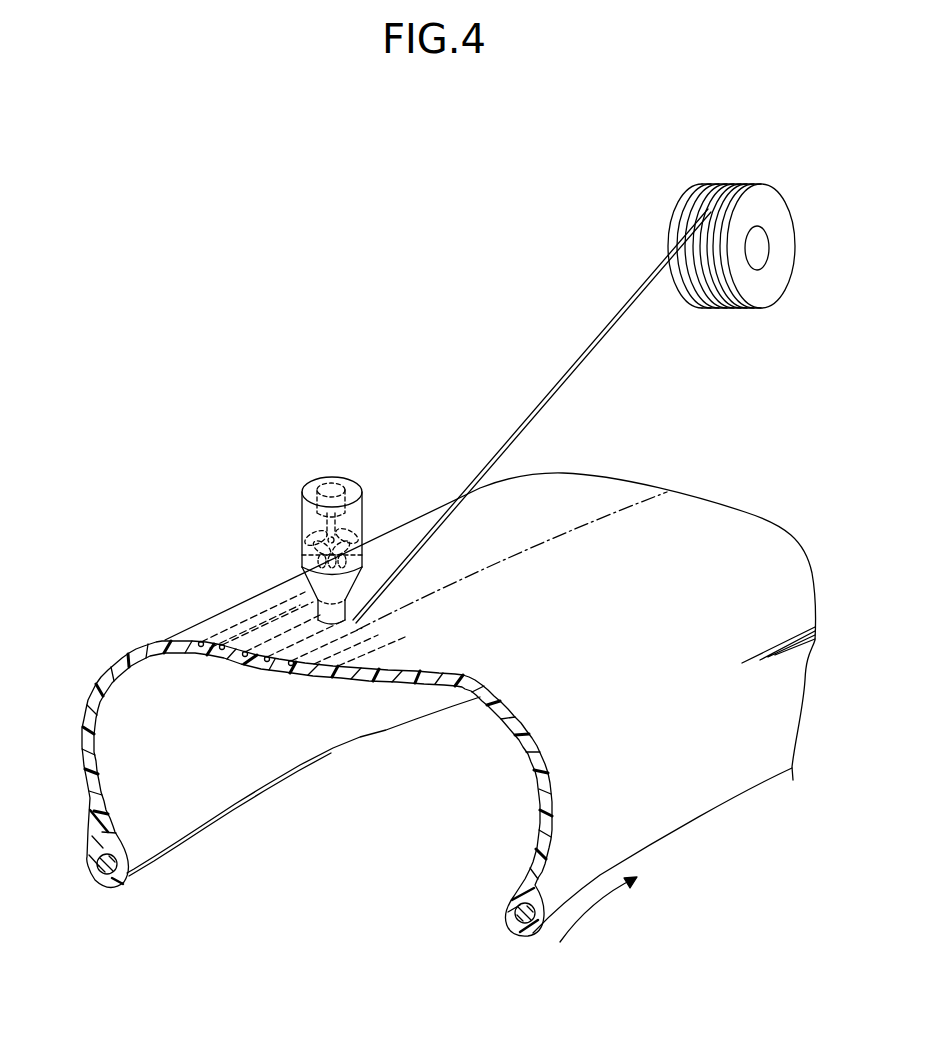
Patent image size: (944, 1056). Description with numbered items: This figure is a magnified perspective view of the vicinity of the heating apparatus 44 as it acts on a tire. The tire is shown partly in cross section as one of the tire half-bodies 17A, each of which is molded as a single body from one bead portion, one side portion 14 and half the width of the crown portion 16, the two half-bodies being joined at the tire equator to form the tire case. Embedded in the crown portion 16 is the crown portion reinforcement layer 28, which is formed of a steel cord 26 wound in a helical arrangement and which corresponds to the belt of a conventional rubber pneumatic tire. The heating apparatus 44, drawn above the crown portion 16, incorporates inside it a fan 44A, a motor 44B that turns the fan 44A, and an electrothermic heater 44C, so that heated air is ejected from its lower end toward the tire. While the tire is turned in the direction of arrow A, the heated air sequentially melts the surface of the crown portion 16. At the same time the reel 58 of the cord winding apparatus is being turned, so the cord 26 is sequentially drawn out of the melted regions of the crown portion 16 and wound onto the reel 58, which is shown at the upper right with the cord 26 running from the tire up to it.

The side portion 14 is at (770, 707).
The crown portion 16 is at (618, 493).
The tire half-body 17A is at (110, 657).
The cord 26 is at (557, 378).
The crown portion reinforcement layer 28 is at (250, 608).
The heating apparatus 44 is at (354, 467).
The fan 44A is at (330, 533).
The motor 44B is at (328, 487).
The electrothermic heater 44C is at (318, 553).
The reel 58 is at (765, 200).
The arrow A is at (598, 908).